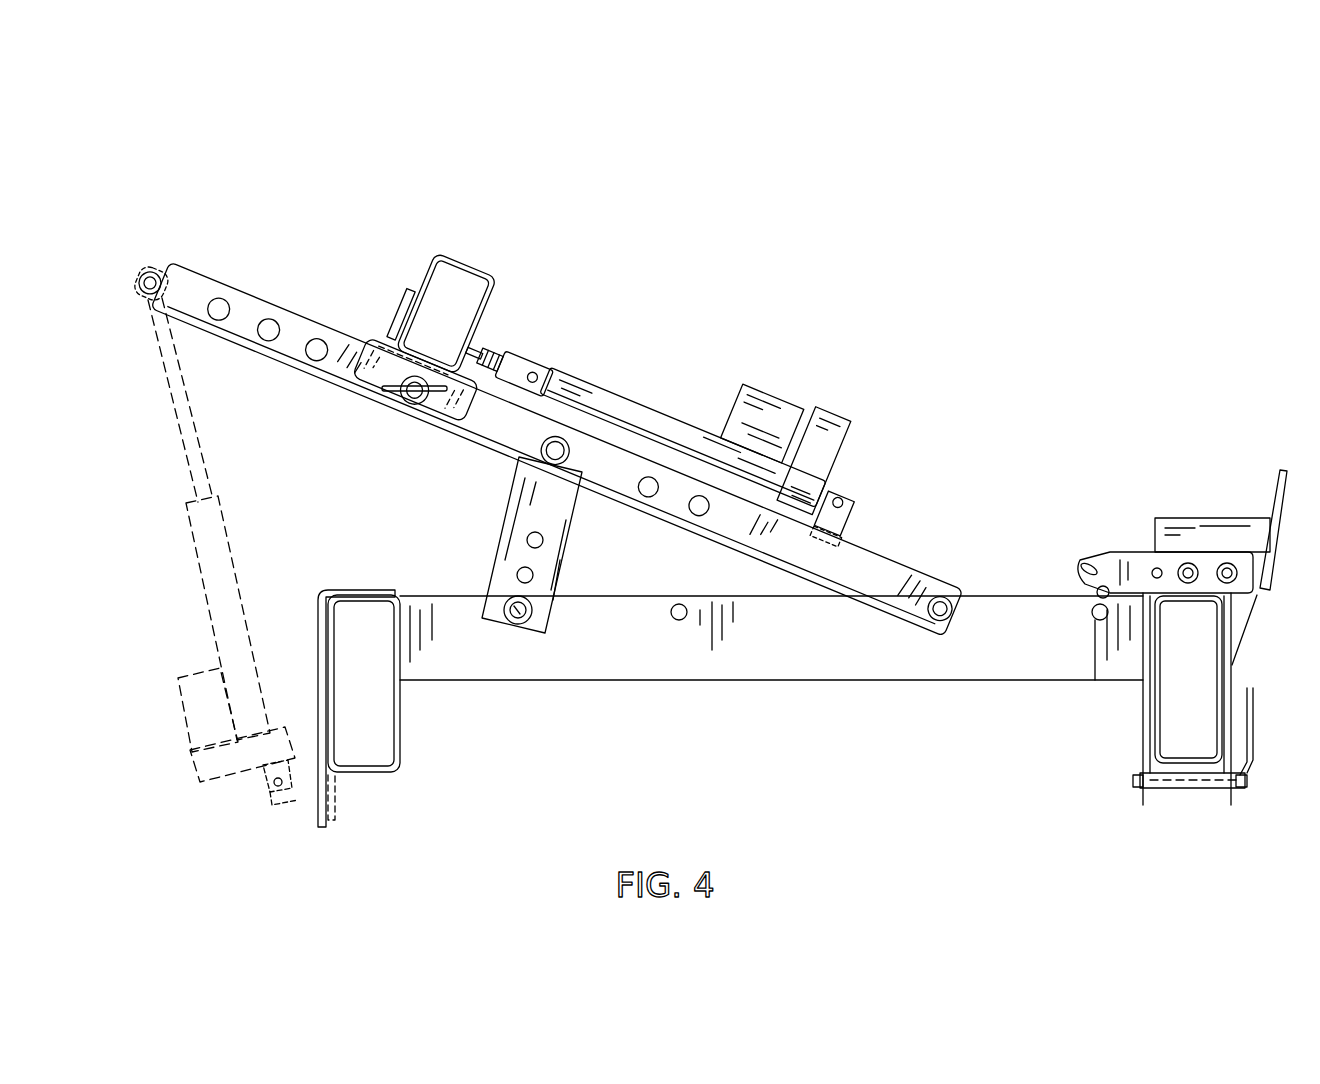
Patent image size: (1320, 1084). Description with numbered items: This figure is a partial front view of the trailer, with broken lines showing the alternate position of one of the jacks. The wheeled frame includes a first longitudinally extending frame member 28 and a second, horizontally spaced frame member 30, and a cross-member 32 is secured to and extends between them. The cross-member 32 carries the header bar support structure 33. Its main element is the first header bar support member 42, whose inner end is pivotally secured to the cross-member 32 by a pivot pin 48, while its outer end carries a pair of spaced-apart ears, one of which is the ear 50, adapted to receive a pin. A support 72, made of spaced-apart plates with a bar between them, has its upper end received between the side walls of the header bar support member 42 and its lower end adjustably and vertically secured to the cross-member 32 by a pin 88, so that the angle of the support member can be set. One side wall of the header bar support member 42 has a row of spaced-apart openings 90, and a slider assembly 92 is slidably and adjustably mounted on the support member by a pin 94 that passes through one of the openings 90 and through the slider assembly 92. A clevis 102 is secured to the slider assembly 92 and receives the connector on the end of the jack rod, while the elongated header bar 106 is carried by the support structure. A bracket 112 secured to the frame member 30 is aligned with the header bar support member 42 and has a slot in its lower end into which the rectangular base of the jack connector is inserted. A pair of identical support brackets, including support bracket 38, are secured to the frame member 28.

The first frame member 28 is at (1168, 708).
The second frame member 30 is at (373, 745).
The cross-member 32 is at (765, 668).
The header bar support structure 33 is at (815, 388).
The support bracket 38 is at (1207, 518).
The first header bar support member 42 is at (311, 318).
The pivot pin 48 is at (963, 593).
The ear 50 is at (150, 272).
The support 72 is at (503, 530).
The pin 88 is at (527, 623).
The openings 90 is at (317, 353).
The slider assembly 92 is at (407, 303).
The pin 94 is at (415, 398).
The clevis 102 is at (533, 360).
The header bar 106 is at (487, 285).
The bracket 112 is at (316, 637).